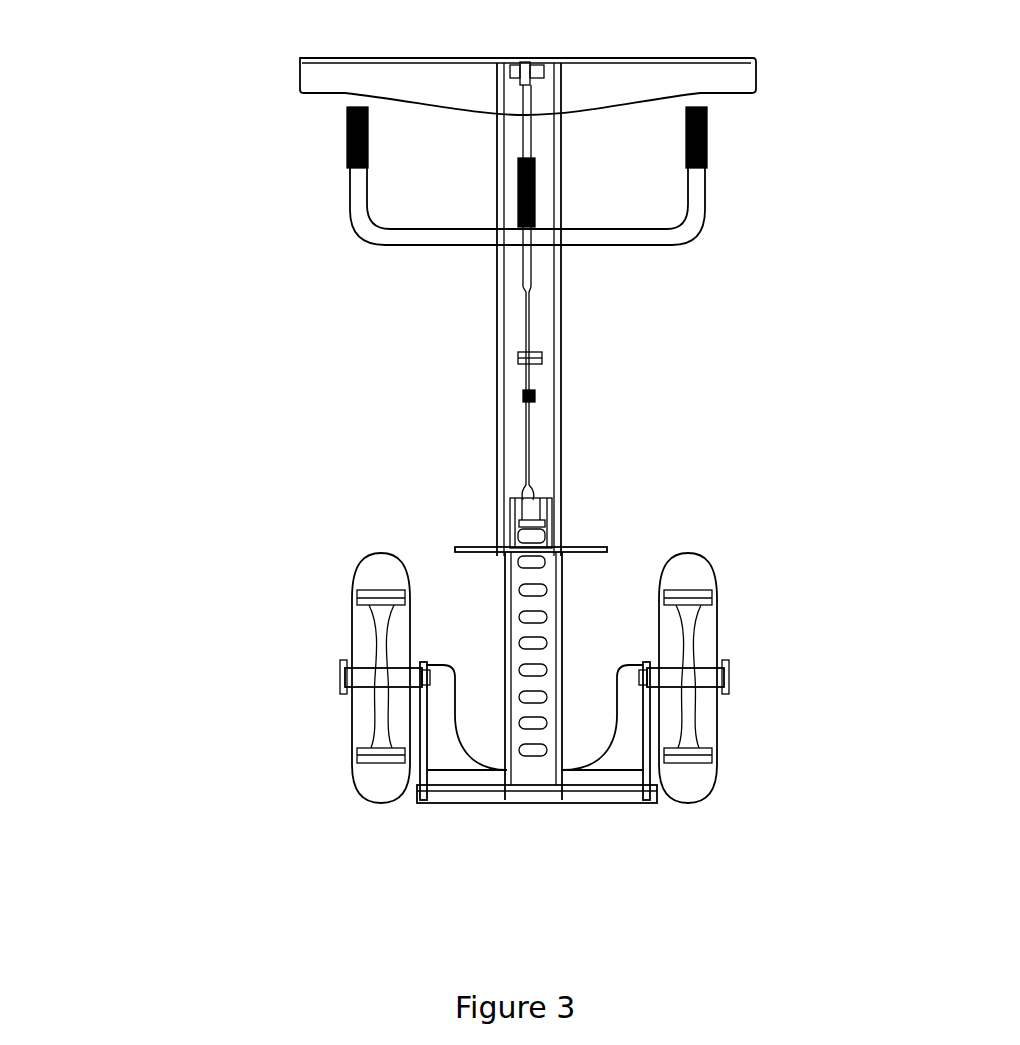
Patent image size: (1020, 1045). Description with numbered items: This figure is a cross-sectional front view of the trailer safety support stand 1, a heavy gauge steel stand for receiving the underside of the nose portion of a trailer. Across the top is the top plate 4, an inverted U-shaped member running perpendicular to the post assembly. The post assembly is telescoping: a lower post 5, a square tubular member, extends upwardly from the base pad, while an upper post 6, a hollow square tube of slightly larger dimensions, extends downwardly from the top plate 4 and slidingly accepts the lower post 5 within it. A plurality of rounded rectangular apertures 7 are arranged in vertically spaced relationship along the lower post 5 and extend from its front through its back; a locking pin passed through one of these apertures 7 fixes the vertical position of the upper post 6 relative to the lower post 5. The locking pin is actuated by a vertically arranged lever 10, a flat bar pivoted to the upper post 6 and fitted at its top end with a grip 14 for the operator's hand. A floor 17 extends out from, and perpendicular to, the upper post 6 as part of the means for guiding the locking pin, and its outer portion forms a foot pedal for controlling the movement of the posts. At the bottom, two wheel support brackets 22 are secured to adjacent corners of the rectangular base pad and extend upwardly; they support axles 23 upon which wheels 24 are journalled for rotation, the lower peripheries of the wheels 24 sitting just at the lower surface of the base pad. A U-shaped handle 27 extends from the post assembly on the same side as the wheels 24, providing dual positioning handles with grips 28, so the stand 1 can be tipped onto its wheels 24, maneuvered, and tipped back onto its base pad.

The trailer safety support stand 1 is at (298, 362).
The top plate 4 is at (665, 56).
The lower post 5 is at (505, 630).
The upper post 6 is at (497, 420).
The apertures 7 is at (538, 618).
The lever 10 is at (530, 325).
The grip 14 is at (535, 203).
The floor 17 is at (578, 545).
The wheel support brackets 22 is at (445, 740).
The axles 23 is at (380, 675).
The wheels 24 is at (345, 628).
The handle 27 is at (352, 202).
The grips 28 is at (707, 134).